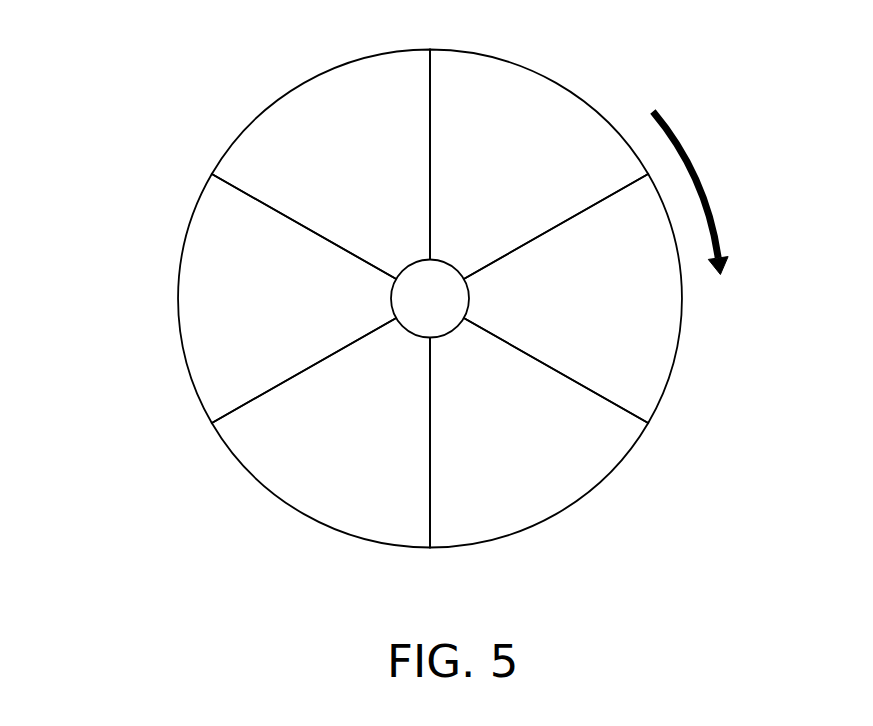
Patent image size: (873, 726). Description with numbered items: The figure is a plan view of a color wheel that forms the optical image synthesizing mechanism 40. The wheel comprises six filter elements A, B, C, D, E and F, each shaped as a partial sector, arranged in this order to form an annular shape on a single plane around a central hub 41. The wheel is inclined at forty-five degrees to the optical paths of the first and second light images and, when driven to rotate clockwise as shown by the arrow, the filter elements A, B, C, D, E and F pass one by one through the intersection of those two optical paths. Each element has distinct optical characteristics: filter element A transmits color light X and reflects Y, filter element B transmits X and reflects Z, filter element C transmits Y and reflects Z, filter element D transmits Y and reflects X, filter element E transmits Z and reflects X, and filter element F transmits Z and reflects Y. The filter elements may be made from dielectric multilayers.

The optical image synthesizing mechanism 40 is at (414, 300).
The central hub / axis 41 is at (400, 297).
The filter element A is at (277, 117).
The filter element B is at (192, 323).
The filter element C is at (273, 475).
The filter element D is at (573, 467).
The filter element E is at (650, 335).
The filter element F is at (556, 128).